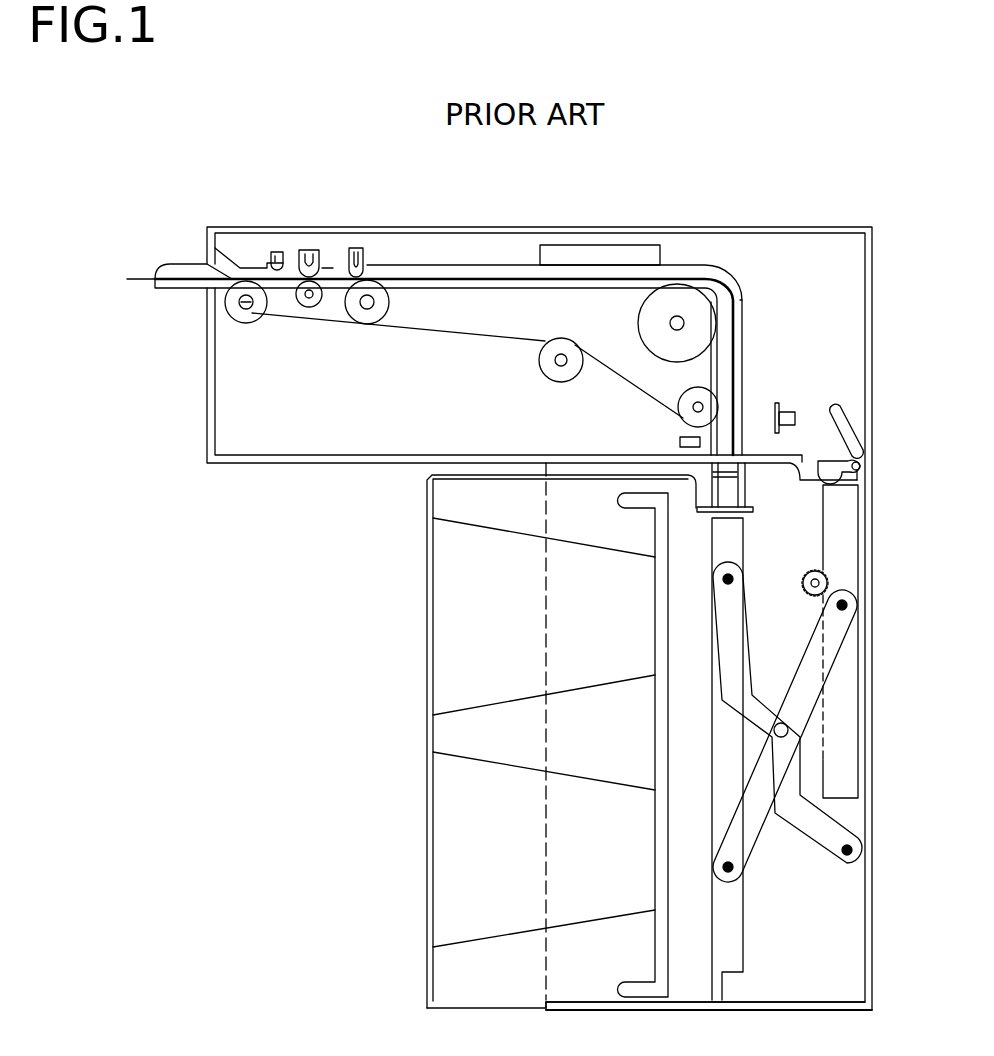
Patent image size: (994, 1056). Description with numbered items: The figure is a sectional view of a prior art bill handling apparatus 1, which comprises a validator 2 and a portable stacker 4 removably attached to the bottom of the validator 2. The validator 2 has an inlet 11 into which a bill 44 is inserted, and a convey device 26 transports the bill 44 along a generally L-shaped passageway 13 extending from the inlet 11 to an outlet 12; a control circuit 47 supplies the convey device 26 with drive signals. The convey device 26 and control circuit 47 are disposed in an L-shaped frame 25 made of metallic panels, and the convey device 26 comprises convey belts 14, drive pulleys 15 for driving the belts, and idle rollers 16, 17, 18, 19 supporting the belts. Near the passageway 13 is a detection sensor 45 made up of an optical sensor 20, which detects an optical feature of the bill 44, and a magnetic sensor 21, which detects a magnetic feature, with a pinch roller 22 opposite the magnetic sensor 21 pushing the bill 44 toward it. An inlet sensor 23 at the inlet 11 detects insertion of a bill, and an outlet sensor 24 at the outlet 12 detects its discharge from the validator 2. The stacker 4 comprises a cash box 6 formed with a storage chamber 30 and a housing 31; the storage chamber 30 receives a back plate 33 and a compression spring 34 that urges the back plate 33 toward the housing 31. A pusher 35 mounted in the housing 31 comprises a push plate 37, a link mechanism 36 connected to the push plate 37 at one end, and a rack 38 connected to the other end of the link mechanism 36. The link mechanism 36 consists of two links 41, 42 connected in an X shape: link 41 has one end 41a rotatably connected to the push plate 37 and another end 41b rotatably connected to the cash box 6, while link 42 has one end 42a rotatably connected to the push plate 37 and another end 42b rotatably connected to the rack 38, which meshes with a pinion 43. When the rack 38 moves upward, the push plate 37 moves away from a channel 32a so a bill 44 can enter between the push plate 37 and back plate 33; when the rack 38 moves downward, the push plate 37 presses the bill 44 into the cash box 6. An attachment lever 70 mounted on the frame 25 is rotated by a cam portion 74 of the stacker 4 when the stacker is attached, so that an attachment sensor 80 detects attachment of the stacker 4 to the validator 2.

The bill handling apparatus 1 is at (296, 536).
The validator 2 is at (207, 420).
The stacker 4 is at (410, 546).
The cash box 6 is at (427, 790).
The inlet 11 is at (190, 265).
The outlet 12 is at (745, 427).
The passageway 13 is at (502, 270).
The convey belts 14 is at (430, 337).
The drive pulleys 15 is at (710, 303).
The idle roller 16 is at (253, 314).
The idle roller 17 is at (389, 304).
The idle roller 18 is at (547, 367).
The idle roller 19 is at (680, 410).
The optical sensor 20 is at (356, 248).
The magnetic sensor 21 is at (309, 250).
The pinch roller 22 is at (306, 307).
The inlet sensor 23 is at (276, 252).
The outlet sensor 24 is at (680, 442).
The frame 25 is at (803, 224).
The convey device 26 is at (583, 412).
The storage chamber 30 is at (690, 990).
The housing 31 is at (787, 990).
The channel 32a is at (745, 500).
The back plate 33 is at (618, 500).
The compression spring 34 is at (523, 933).
The pusher 35 is at (770, 968).
The link mechanism 36 is at (787, 893).
The push plate 37 is at (722, 990).
The rack 38 is at (850, 525).
The link 41 is at (800, 822).
The one end of link 41a is at (714, 602).
The other end of link 41b is at (847, 856).
The link 42 is at (802, 673).
The one end of link 42a is at (716, 862).
The other end of link 42b is at (858, 590).
The pinion 43 is at (805, 590).
The bill 44 is at (148, 282).
The detection sensor 45 is at (370, 252).
The control circuit 47 is at (595, 244).
The attachment lever 70 is at (866, 445).
The cam portion 74 is at (862, 483).
The attachment sensor 80 is at (790, 412).